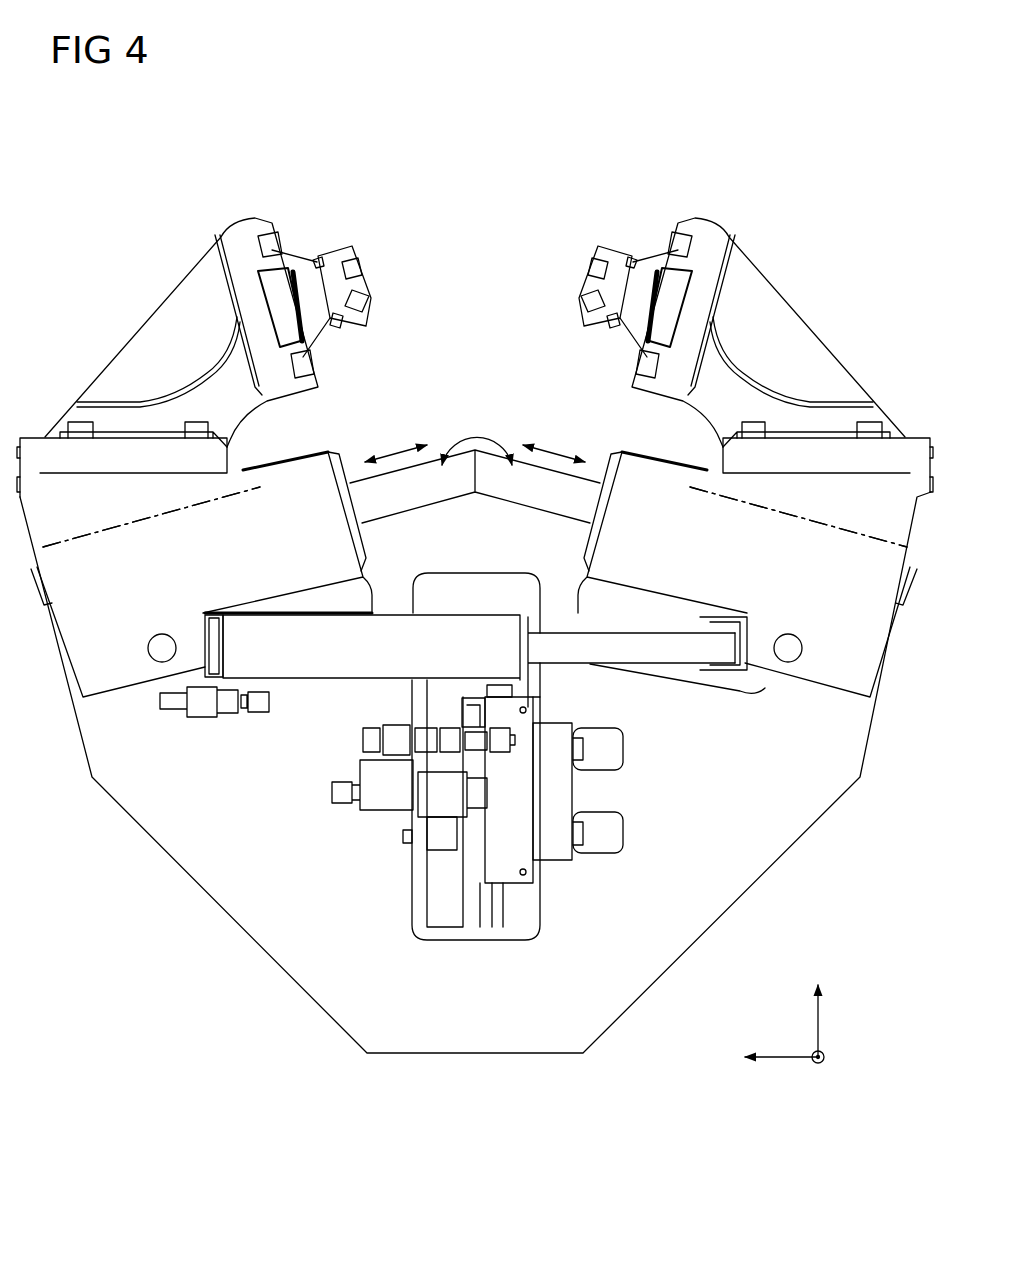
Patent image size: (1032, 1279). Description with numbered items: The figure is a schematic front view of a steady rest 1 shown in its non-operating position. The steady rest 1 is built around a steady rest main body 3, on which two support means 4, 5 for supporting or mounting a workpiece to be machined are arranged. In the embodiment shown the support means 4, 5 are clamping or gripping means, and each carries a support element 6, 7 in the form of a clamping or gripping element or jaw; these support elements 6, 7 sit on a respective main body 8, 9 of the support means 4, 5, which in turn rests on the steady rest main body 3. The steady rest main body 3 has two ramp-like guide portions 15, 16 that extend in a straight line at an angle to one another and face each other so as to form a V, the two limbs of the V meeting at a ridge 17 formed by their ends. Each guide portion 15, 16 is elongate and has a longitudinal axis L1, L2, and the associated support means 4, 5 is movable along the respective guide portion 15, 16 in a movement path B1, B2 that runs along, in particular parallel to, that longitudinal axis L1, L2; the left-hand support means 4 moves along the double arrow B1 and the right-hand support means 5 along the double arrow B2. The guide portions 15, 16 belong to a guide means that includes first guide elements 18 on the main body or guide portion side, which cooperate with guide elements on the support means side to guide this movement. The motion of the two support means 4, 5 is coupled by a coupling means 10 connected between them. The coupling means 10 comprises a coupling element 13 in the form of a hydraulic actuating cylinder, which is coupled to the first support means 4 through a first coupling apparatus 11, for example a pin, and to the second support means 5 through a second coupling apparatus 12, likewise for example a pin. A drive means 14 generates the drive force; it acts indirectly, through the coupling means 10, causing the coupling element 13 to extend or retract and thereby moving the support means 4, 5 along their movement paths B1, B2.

The steady rest 1 is at (184, 148).
The steady rest main body 3 is at (741, 898).
The support means 4 is at (125, 308).
The support means 5 is at (858, 318).
The support element 6 is at (304, 234).
The support element 7 is at (643, 236).
The main body 8 is at (58, 448).
The main body 9 is at (891, 448).
The coupling means 10 is at (274, 725).
The first coupling apparatus 11 is at (212, 645).
The second coupling apparatus 12 is at (745, 640).
The coupling element 13 is at (330, 665).
The drive means 14 is at (662, 806).
The guide portion 15 is at (302, 478).
The guide portion 16 is at (648, 478).
The ridge 17 is at (460, 456).
The first guide elements 18 is at (474, 574).
The longitudinal axis L1 is at (95, 535).
The longitudinal axis L2 is at (858, 537).
The movement path B1 is at (403, 442).
The movement path B2 is at (560, 442).